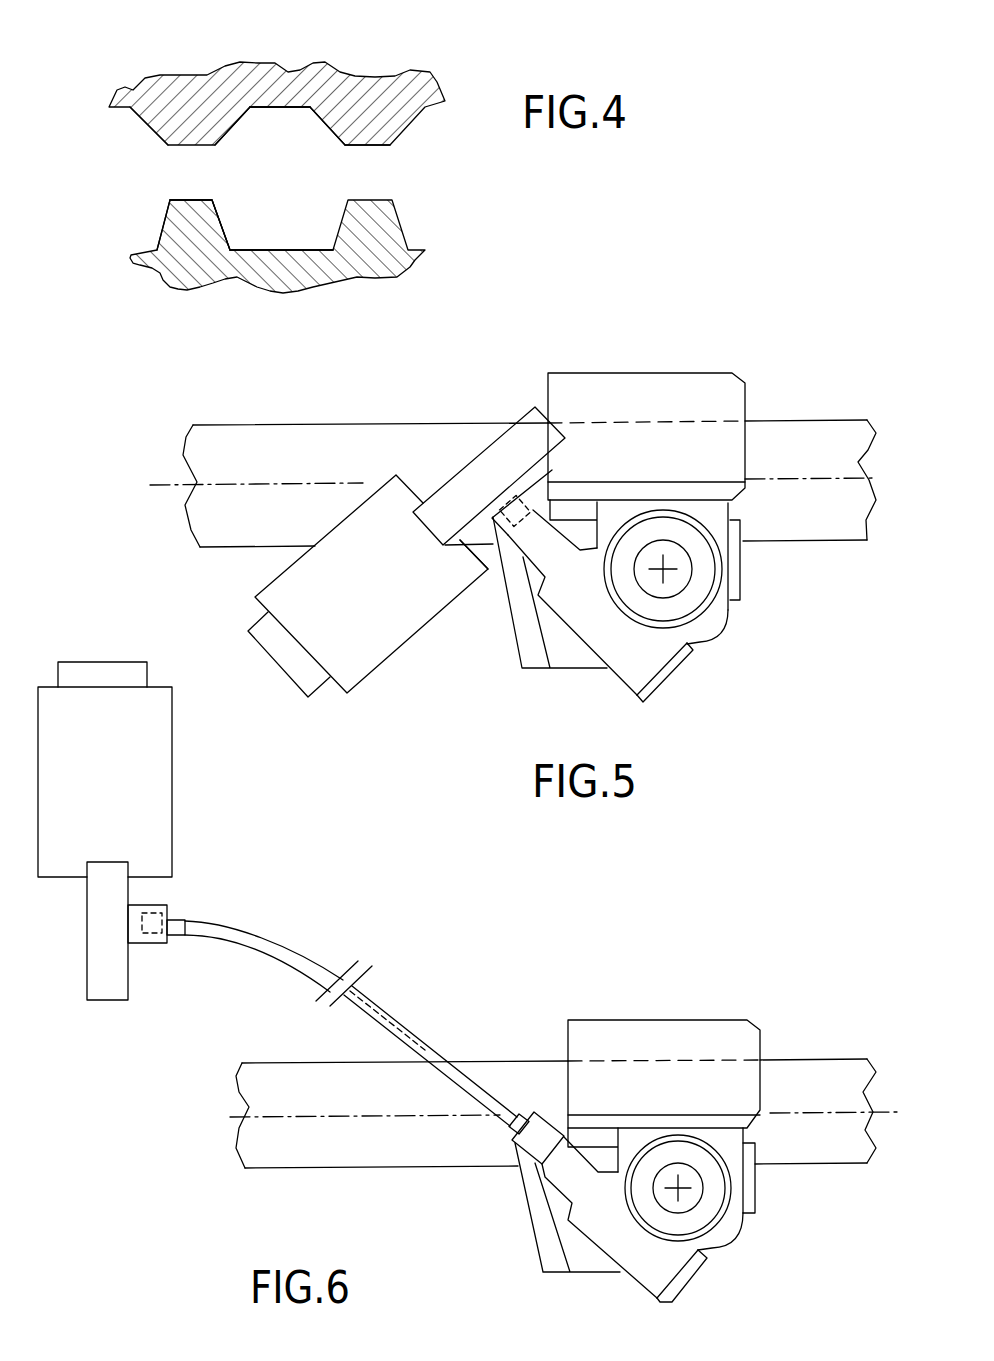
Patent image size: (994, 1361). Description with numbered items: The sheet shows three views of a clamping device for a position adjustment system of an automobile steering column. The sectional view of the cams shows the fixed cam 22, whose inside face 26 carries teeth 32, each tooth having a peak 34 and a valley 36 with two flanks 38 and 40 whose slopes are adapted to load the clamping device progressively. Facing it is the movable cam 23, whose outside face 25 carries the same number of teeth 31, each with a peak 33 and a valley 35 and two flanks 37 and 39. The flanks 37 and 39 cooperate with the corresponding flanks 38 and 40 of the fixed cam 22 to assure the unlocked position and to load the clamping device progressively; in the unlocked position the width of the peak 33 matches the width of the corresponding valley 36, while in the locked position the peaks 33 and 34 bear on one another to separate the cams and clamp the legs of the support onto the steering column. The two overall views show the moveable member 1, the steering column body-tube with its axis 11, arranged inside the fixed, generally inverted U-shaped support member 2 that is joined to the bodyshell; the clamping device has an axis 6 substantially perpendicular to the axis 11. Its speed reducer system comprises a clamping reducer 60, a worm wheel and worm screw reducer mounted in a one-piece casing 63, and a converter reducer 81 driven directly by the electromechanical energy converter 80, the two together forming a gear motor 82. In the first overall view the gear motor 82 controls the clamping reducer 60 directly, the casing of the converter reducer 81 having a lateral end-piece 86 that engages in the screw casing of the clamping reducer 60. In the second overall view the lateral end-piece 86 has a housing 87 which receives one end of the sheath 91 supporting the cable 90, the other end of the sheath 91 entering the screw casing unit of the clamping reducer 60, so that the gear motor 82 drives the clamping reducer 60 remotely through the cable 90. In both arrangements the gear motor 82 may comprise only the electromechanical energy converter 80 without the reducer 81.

In FIG. 5, the moveable member 1 is at (278, 421).
In FIG. 6, the moveable member 1 is at (516, 1057).
In FIG. 5, the support member 2 is at (685, 371).
In FIG. 6, the support member 2 is at (693, 1017).
In FIG. 5, the axis of the clamping device 6 is at (663, 569).
In FIG. 6, the axis of the clamping device 6 is at (678, 1188).
In FIG. 5, the axis of the member 11 is at (833, 527).
In FIG. 6, the axis of the member 11 is at (337, 1120).
In FIG. 4, the fixed cam 22 is at (397, 72).
In FIG. 4, the movable cam 23 is at (396, 281).
In FIG. 4, the outside face 25 is at (297, 263).
In FIG. 4, the inside face 26 is at (291, 118).
In FIG. 4, the teeth of the movable cam 31 is at (190, 247).
In FIG. 4, the teeth of the fixed cam 32 is at (189, 115).
In FIG. 4, the peak 33 is at (180, 200).
In FIG. 4, the peak 34 is at (372, 146).
In FIG. 4, the valley 35 is at (275, 230).
In FIG. 4, the valley 36 is at (280, 127).
In FIG. 4, the flank 37 is at (160, 230).
In FIG. 4, the flank 38 is at (245, 125).
In FIG. 4, the flank 39 is at (243, 258).
In FIG. 4, the flank 40 is at (318, 118).
In FIG. 5, the clamping reducer 60 is at (647, 655).
In FIG. 6, the clamping reducer 60 is at (652, 1262).
In FIG. 5, the casing 63 is at (604, 634).
In FIG. 6, the casing 63 is at (614, 1234).
In FIG. 5, the electromechanical energy converter 80 is at (367, 633).
In FIG. 6, the electromechanical energy converter 80 is at (143, 742).
In FIG. 5, the converter reducer 81 is at (511, 453).
In FIG. 6, the converter reducer 81 is at (98, 957).
In FIG. 5, the gear motor 82 is at (429, 530).
In FIG. 6, the gear motor 82 is at (147, 831).
In FIG. 5, the lateral end-piece 86 is at (493, 522).
In FIG. 6, the lateral end-piece 86 is at (146, 938).
In FIG. 5, the housing 87 is at (543, 478).
In FIG. 6, the housing 87 is at (165, 903).
In FIG. 6, the cable 90 is at (393, 1011).
In FIG. 6, the sheath 91 is at (303, 952).